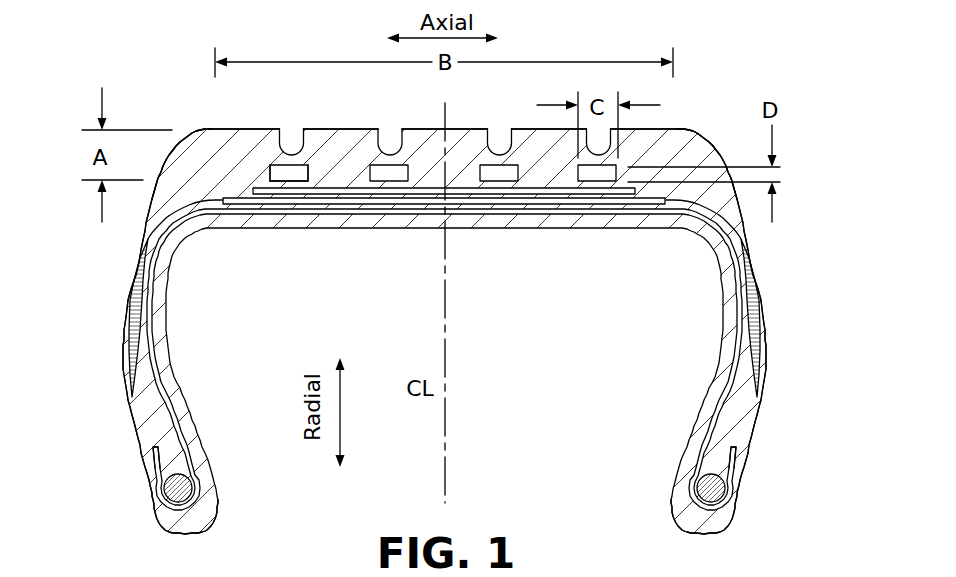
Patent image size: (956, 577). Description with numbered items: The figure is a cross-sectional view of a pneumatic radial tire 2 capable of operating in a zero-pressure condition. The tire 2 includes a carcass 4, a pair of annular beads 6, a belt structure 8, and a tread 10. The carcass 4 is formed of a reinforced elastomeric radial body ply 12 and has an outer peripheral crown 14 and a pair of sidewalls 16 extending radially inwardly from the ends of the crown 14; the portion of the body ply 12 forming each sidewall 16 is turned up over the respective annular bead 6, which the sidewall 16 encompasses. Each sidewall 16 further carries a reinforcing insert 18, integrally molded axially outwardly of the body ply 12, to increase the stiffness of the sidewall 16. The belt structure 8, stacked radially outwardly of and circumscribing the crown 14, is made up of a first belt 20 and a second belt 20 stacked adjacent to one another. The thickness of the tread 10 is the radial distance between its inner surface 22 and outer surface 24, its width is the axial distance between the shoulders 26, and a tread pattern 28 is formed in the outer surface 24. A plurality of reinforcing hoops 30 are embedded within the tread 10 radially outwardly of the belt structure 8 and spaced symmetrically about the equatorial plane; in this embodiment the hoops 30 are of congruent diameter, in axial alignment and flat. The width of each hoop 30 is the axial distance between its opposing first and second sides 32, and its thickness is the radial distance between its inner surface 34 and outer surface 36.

The pneumatic radial tire 2 is at (737, 121).
The carcass 4 is at (630, 240).
The annular beads 6 is at (178, 489).
The belt structure 8 is at (241, 185).
The tread 10 is at (345, 145).
The radial body ply 12 is at (715, 400).
The crown 14 is at (565, 230).
The sidewalls 16 is at (130, 423).
The reinforcing insert 18 is at (131, 312).
The belt 20 is at (146, 240).
The inner surface of the tread 22 is at (449, 188).
The outer surface of the tread 24 is at (527, 128).
The shoulders 26 is at (190, 137).
The tread pattern 28 is at (389, 152).
The reinforcing hoops 30 is at (390, 182).
The first and second sides of the reinforcing hoop 32 is at (270, 181).
The inner surface of the reinforcing hoop 34 is at (290, 182).
The outer surface of the reinforcing hoop 36 is at (300, 165).